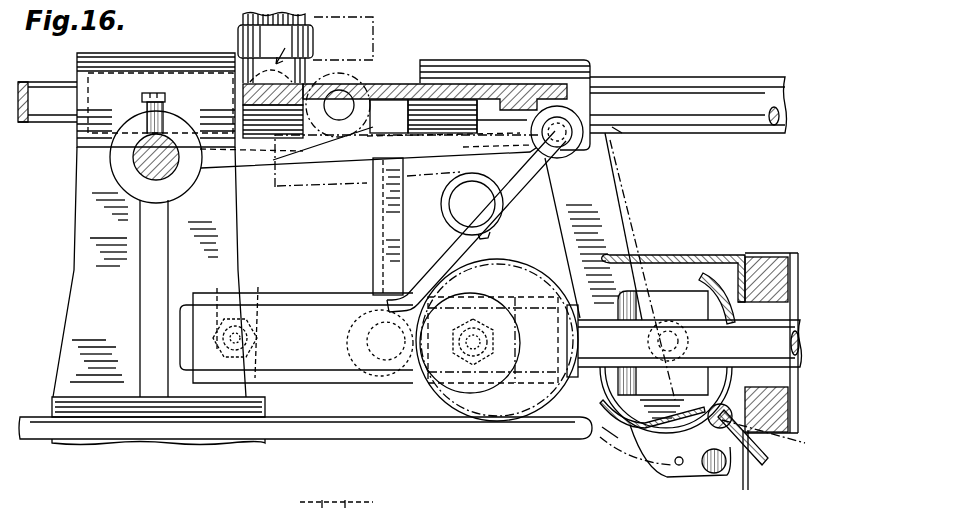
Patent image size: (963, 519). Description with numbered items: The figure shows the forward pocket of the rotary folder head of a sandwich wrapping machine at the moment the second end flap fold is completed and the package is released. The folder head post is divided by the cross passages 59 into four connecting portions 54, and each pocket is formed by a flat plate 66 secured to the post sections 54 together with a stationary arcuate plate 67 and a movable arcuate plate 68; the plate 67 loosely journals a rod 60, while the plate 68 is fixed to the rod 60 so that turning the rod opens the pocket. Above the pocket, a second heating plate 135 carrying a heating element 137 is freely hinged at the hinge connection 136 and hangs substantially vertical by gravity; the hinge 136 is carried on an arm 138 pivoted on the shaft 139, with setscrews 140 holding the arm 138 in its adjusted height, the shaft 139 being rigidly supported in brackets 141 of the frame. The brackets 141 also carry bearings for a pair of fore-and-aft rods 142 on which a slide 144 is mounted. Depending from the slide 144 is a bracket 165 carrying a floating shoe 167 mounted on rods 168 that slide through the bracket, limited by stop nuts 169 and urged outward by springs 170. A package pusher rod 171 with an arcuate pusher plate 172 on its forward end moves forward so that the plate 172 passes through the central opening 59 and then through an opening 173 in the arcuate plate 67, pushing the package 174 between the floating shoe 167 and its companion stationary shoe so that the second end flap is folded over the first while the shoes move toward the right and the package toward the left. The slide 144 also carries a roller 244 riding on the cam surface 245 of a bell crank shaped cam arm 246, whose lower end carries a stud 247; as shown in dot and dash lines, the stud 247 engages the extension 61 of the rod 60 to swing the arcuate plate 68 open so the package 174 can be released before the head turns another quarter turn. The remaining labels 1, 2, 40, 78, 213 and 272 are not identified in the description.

The wheel 1 is at (497, 340).
The hub 2 is at (470, 343).
The base line 40 is at (302, 502).
The connecting portions 54 is at (775, 247).
The cross passages 59 is at (756, 380).
The rods 60 is at (711, 420).
The extension 61 is at (765, 455).
The flat plate 66 is at (697, 255).
The arcuate plate 67 is at (728, 285).
The arcuate plate 68 is at (628, 432).
The tube 78 is at (682, 77).
The second heating plate 135 is at (497, 225).
The hinge connection 136 is at (561, 142).
The heating element 137 is at (472, 206).
The arm 138 is at (430, 146).
The shaft 139 is at (166, 167).
The setscrews 140 is at (165, 97).
The brackets 141 is at (100, 113).
The fore-and-aft extending rods 142 is at (401, 103).
The slide 144 is at (620, 127).
The bracket 165 is at (375, 251).
The floating shoe 167 is at (369, 338).
The rods 168 is at (238, 337).
The stop nuts 169 is at (262, 323).
The springs 170 is at (207, 310).
The package pusher rod 171 is at (746, 343).
The arcuate pusher plate 172 is at (582, 338).
The opening 173 is at (730, 310).
The package 174 is at (430, 406).
The line 213 is at (373, 508).
The roller 244 is at (348, 75).
The cam surface 245 is at (417, 80).
The cam arm 246 is at (463, 60).
The stud 247 is at (722, 468).
The block 272 is at (660, 290).